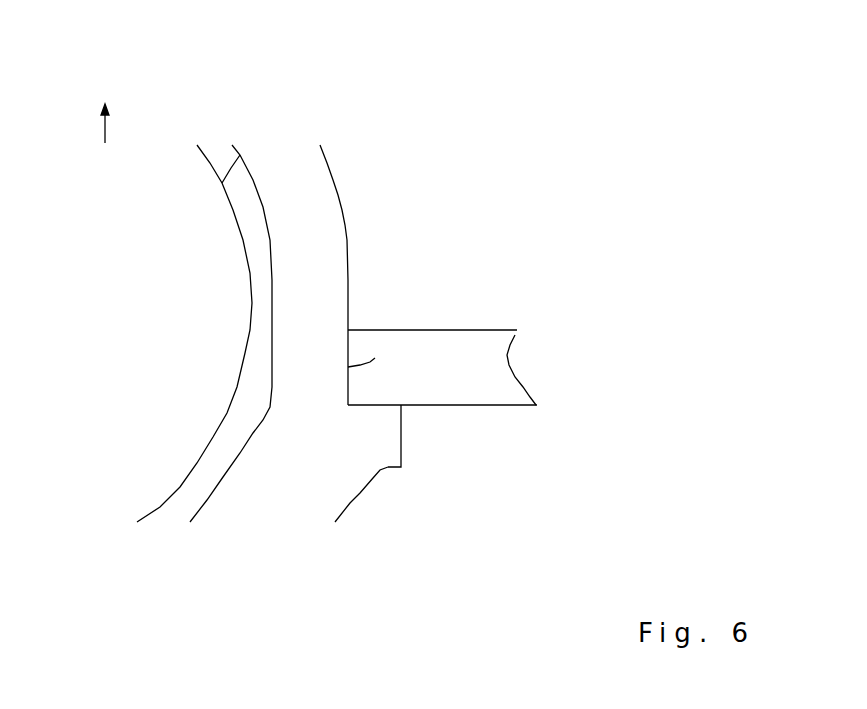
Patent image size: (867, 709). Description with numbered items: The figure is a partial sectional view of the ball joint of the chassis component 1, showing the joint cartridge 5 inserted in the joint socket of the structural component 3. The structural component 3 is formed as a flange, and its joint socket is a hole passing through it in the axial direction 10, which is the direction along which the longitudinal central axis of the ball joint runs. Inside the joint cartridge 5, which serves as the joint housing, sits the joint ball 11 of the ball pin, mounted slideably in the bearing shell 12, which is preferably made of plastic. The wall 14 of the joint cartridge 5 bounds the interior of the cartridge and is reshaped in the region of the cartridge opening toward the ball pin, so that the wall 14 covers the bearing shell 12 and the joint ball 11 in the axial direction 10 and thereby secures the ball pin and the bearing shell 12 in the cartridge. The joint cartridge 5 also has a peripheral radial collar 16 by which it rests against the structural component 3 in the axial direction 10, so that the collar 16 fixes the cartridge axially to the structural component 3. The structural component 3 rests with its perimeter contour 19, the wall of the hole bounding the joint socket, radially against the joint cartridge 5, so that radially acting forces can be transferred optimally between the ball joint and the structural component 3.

The chassis component 1 is at (425, 62).
The structural component 3 is at (443, 342).
The joint cartridge 5 is at (370, 505).
The axial direction 10 is at (73, 123).
The joint ball 11 is at (223, 333).
The bearing shell 12 is at (235, 334).
The wall 14 is at (366, 275).
The collar 16 is at (435, 436).
The perimeter contour 19 is at (381, 328).